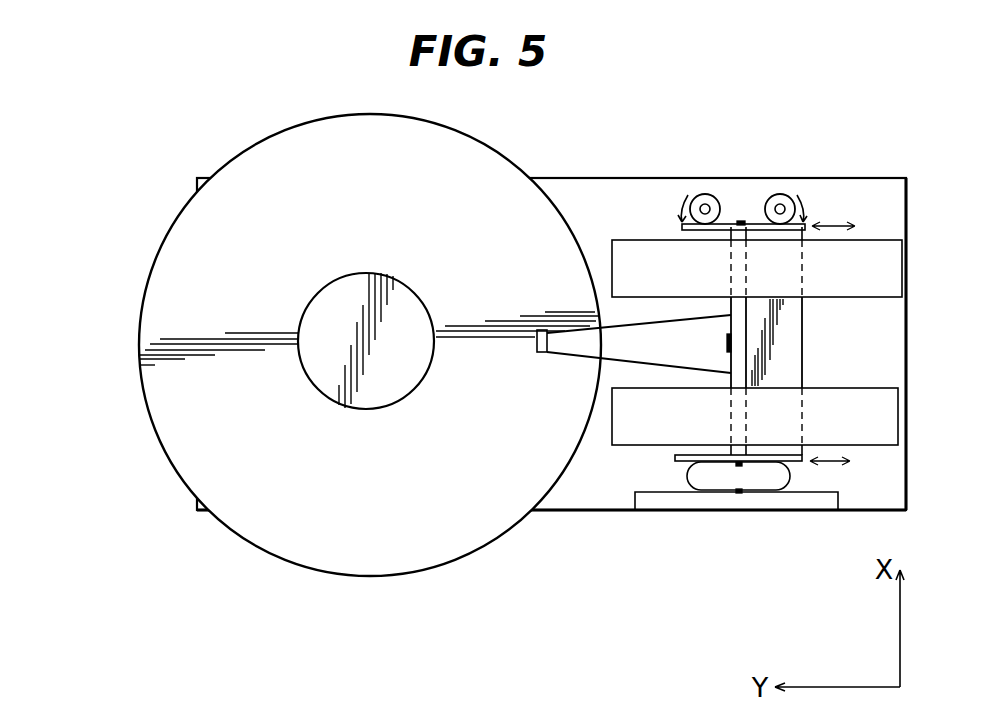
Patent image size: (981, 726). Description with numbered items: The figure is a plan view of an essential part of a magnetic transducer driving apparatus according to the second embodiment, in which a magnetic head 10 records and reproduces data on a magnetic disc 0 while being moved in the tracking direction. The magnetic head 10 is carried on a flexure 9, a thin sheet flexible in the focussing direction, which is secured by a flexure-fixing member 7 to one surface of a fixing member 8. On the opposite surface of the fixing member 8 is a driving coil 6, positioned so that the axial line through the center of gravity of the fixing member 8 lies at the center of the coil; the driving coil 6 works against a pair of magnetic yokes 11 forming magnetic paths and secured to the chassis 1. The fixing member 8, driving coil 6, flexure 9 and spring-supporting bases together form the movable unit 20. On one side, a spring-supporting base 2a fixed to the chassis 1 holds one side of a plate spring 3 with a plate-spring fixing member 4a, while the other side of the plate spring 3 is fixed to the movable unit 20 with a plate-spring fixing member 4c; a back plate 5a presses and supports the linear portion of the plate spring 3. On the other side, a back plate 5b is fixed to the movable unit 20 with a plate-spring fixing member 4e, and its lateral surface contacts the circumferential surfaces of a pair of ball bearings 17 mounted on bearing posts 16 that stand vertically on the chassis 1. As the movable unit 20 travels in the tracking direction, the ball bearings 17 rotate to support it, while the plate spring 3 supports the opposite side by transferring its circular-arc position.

The magnetic disc 0 is at (488, 168).
The chassis 1 is at (570, 500).
The spring-supporting base 2a is at (825, 507).
The plate spring 3 is at (793, 490).
The plate-spring fixing member 4a is at (738, 492).
The plate-spring fixing member 4c is at (738, 466).
The plate-spring fixing member 4e is at (740, 221).
The back plate 5a is at (803, 462).
The back plate 5b is at (805, 228).
The driving coil 6 is at (793, 312).
The flexure-fixing member 7 is at (728, 340).
The fixing member 8 is at (740, 306).
The flexure 9 is at (582, 345).
The magnetic head 10 is at (536, 352).
The magnetic yoke 11 is at (895, 272).
The bearing post 16 is at (700, 198).
The ball bearing 17 is at (705, 204).
The movable unit 20 is at (824, 341).